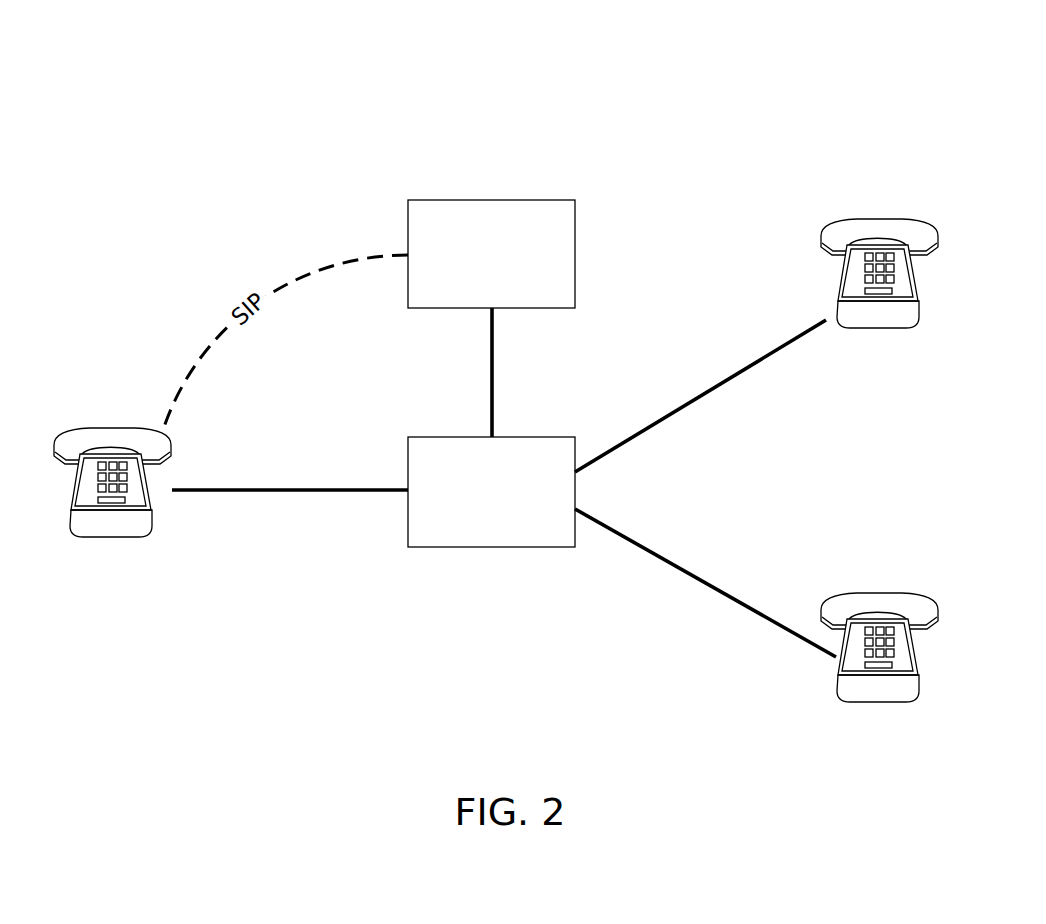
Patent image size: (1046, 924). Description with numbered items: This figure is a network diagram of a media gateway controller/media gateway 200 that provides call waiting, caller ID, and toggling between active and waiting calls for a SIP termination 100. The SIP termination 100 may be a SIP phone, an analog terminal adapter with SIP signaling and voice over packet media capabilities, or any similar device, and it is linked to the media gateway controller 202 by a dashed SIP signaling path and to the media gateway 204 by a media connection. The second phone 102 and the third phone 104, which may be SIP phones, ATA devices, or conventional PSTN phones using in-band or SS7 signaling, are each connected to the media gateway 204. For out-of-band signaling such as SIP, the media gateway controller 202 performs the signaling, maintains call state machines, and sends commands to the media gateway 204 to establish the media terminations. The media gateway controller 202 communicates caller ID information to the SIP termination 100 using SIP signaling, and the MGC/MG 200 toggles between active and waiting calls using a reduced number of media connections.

The media gateway controller/media gateway 200 is at (392, 95).
The media gateway controller 202 is at (547, 200).
The media gateway 204 is at (547, 437).
The SIP termination 100 is at (82, 428).
The phone P2 102 is at (907, 220).
The phone P3 104 is at (907, 593).